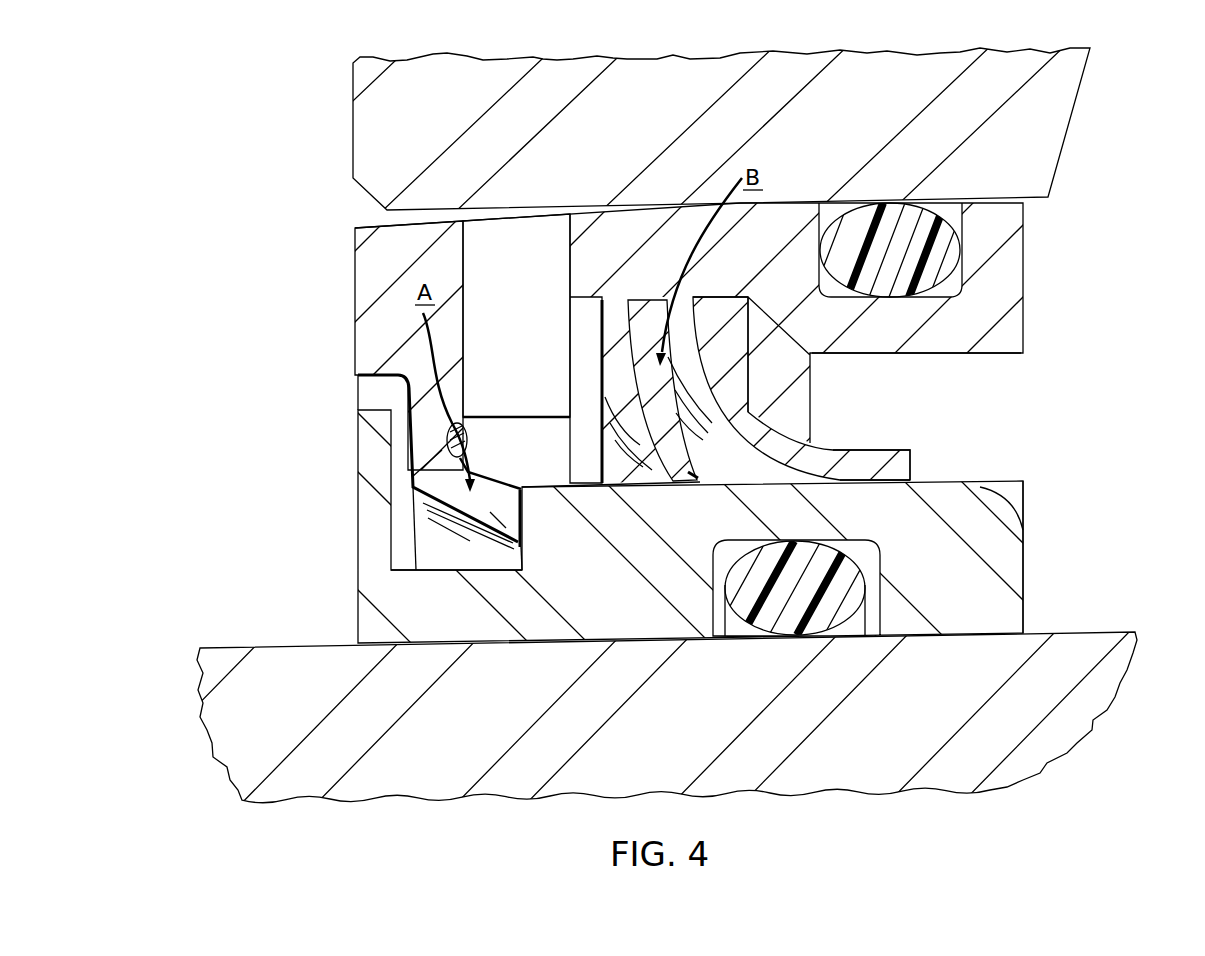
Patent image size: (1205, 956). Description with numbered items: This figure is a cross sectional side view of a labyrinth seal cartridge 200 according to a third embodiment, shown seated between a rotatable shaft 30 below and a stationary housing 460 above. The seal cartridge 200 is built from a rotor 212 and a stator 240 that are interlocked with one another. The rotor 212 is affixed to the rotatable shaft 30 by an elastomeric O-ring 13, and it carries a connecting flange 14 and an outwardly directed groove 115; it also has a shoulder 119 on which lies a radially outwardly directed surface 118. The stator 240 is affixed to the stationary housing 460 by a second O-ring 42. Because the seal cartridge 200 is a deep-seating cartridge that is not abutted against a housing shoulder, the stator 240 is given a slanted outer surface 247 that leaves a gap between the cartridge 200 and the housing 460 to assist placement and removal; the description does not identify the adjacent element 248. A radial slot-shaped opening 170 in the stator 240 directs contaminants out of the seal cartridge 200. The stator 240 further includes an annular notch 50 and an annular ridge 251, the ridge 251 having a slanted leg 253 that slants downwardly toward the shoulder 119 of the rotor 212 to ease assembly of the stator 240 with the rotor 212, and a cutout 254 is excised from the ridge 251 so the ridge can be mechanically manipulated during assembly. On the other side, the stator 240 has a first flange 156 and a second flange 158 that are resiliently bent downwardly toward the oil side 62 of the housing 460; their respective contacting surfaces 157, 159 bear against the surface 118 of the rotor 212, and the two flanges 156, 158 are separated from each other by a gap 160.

The labyrinth seal cartridge 200 is at (208, 178).
The stationary housing 460 is at (1058, 113).
The slanted outer surface 247 is at (387, 223).
The retainer 248 is at (355, 298).
The radial slot-shaped opening 170 is at (531, 256).
The annular notch 50 is at (372, 393).
The annular ridge 251 is at (427, 440).
The cutout 254 is at (478, 440).
The connecting flange 14 is at (370, 508).
The slanted leg 253 is at (493, 510).
The outwardly directed groove 115 is at (427, 558).
The shoulder 119 is at (545, 527).
The rotor 212 is at (998, 555).
The elastomeric O-ring 13 is at (848, 585).
The O-ring 42 is at (940, 250).
The stator 240 is at (1000, 295).
The oil side 62 is at (1082, 405).
The radially outwardly directed surface 118 is at (912, 480).
The contacting surface 157 is at (720, 430).
The contacting surface 159 is at (613, 443).
The second flange 158 is at (670, 490).
The gap 160 is at (753, 467).
The first flange 156 is at (893, 462).
The rotatable shaft 30 is at (1103, 672).